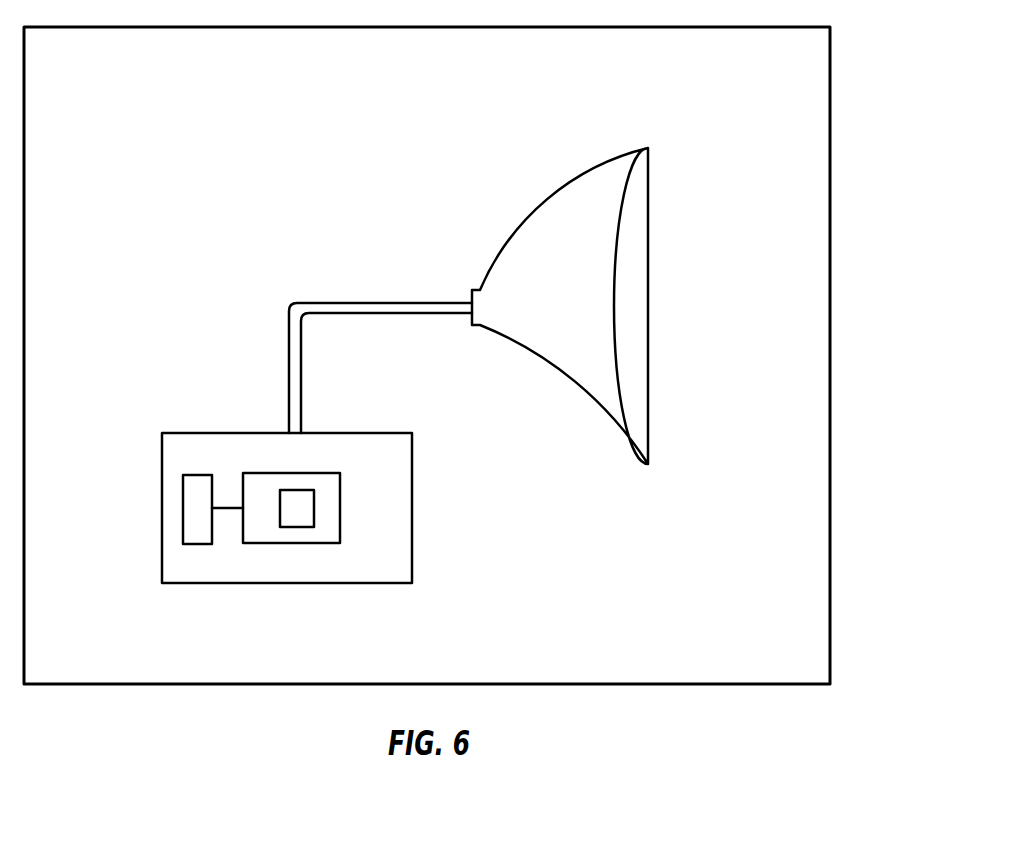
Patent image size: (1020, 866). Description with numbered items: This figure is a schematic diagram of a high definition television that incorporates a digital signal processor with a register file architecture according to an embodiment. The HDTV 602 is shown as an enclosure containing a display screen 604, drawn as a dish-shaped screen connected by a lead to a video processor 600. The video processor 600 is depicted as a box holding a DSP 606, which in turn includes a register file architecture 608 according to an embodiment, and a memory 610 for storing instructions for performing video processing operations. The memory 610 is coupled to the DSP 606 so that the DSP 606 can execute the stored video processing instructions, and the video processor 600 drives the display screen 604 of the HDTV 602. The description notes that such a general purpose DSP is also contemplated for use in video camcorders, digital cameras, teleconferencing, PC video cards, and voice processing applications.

The video processor 600 is at (328, 508).
The HDTV 602 is at (469, 355).
The display screen 604 is at (468, 302).
The DSP 606 is at (326, 467).
The register file architecture 608 is at (261, 537).
The memory 610 is at (167, 496).